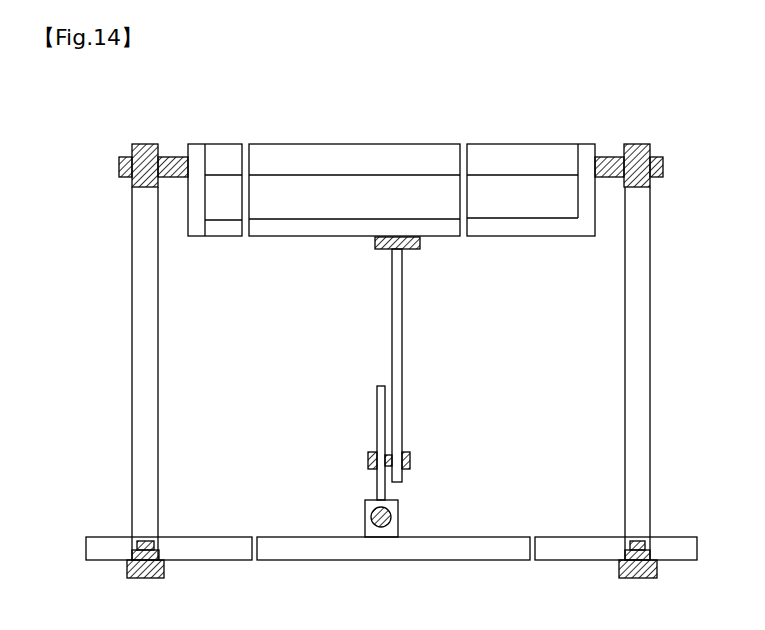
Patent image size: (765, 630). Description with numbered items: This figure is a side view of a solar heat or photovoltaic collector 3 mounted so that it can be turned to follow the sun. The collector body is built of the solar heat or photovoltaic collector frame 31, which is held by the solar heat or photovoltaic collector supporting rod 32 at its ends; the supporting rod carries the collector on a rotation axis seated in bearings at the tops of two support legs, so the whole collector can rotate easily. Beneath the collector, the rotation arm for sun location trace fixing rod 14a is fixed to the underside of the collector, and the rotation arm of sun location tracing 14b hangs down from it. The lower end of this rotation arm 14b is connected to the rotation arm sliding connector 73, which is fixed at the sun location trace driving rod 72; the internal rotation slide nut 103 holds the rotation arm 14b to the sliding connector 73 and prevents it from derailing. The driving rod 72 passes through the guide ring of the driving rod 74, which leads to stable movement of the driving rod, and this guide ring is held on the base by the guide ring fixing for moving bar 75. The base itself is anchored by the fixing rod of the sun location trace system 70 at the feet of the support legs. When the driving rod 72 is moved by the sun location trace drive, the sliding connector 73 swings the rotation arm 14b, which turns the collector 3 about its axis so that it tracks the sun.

The solar heat or photovoltaic collector 3 is at (354, 196).
The rotation arm for sun location trace fixing rod 14a is at (418, 248).
The rotation arm of sun location tracing 14b is at (402, 326).
The solar heat or photovoltaic collector frame 31 is at (397, 157).
The solar heat or photovoltaic collector supporting rod 32 is at (563, 225).
The fixing rod of the sun location trace system 70 is at (657, 575).
The sun location trace driving rod 72 is at (390, 515).
The rotation arm sliding connector 73 is at (377, 412).
The guide ring of the driving rod 74 is at (363, 510).
The guide ring fixing for moving bar 75 is at (501, 547).
The internal rotation slide nut 103 is at (410, 460).